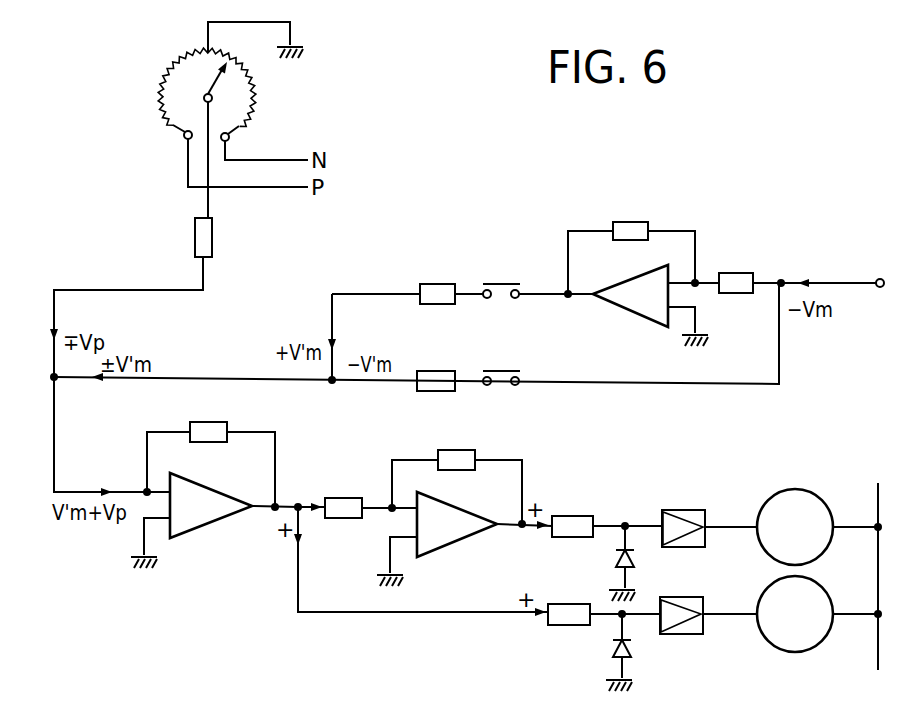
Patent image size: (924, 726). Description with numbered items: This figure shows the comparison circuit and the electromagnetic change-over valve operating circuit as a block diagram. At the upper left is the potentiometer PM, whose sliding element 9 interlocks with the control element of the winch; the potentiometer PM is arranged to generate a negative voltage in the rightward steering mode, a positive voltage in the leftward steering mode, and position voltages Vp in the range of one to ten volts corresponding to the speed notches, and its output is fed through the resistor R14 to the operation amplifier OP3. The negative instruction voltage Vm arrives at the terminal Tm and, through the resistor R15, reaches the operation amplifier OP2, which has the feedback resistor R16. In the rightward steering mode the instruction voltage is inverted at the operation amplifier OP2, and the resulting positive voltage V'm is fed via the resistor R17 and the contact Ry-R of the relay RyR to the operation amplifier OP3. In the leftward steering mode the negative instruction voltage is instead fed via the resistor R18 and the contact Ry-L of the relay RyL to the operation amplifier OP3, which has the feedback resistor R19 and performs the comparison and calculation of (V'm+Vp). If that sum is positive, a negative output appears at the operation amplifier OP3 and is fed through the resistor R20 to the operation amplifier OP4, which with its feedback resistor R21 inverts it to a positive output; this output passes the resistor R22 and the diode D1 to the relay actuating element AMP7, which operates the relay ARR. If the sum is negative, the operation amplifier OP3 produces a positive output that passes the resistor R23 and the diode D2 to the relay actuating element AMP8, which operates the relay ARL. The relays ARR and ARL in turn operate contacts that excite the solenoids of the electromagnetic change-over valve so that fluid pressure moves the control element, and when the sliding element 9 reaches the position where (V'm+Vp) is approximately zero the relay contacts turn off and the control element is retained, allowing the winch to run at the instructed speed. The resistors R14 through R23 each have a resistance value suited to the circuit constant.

The potentiometer PM is at (178, 63).
The sliding element 9 is at (216, 88).
The resistor R14 is at (226, 237).
The resistor R15 is at (734, 271).
The resistor R16 is at (629, 219).
The resistor R17 is at (438, 280).
The resistor R18 is at (436, 367).
The resistor R19 is at (207, 419).
The resistor R20 is at (339, 495).
The resistor R21 is at (452, 448).
The resistor R22 is at (570, 515).
The resistor R23 is at (568, 603).
The contact of relay RyR Ry-R is at (500, 278).
The contact of relay RyL Ry-L is at (499, 365).
The operation amplifier OP2 is at (650, 305).
The operation amplifier OP3 is at (191, 520).
The operation amplifier OP4 is at (437, 539).
The terminal Tm is at (875, 269).
The diode D1 is at (610, 563).
The diode D2 is at (603, 652).
The relay actuating element AMP7 is at (684, 516).
The relay actuating element AMP8 is at (687, 605).
The relay ARR is at (795, 527).
The relay ARL is at (795, 614).